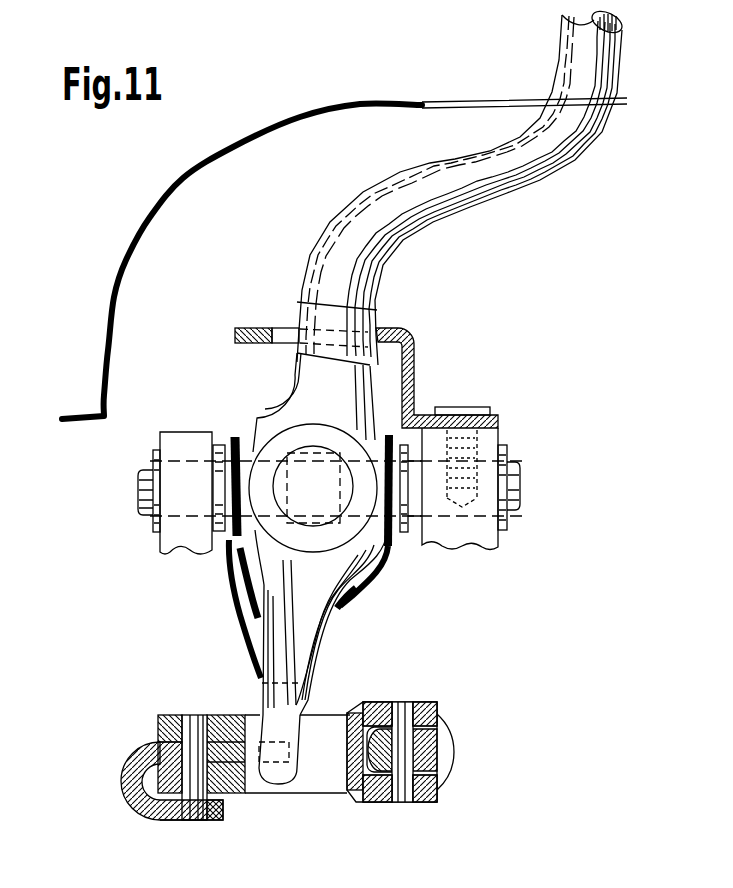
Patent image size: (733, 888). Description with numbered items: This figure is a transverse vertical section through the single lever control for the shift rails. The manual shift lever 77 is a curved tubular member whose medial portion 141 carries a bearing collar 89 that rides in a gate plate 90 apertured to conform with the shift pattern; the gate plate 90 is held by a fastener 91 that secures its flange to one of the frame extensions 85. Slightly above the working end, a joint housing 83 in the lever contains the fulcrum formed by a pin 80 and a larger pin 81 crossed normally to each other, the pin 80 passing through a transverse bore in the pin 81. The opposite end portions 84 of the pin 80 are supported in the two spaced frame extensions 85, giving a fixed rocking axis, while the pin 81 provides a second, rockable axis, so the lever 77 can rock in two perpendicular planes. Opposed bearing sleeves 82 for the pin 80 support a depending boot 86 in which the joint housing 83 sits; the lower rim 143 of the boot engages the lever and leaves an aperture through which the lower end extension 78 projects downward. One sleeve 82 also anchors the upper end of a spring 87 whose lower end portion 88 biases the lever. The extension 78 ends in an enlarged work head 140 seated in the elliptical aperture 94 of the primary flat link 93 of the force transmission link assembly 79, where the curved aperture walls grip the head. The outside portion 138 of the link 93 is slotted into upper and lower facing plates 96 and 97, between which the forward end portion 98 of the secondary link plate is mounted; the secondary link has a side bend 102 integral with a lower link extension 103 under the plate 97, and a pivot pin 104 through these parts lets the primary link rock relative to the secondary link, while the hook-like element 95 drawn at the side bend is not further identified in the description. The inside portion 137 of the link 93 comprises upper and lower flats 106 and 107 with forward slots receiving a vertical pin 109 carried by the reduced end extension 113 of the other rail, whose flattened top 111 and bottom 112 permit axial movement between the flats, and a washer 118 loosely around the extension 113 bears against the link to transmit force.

The manual shift lever 77 is at (624, 45).
The medial portion of the shift lever 141 is at (398, 292).
The bearing collar 89 is at (292, 311).
The gate plate 90 is at (401, 331).
The frame extensions 85 is at (500, 547).
The fastener 91 is at (487, 407).
The pin 80 is at (412, 532).
The end portions of pin 80 84 is at (519, 488).
The spring 87 is at (221, 444).
The bearing sleeves 82 is at (238, 440).
The joint housing 83 is at (273, 407).
The pin 81 is at (317, 450).
The lower end portion of the spring 88 is at (233, 628).
The boot 86 is at (368, 594).
The lower rim of the boot 143 is at (345, 610).
The lower end extension 78 is at (302, 672).
The elliptically shaped aperture 94 is at (281, 792).
The work head 140 is at (289, 784).
The force transmission link assembly 79 is at (356, 828).
The primary flat link 93 is at (225, 715).
The upper facing plate 96 is at (194, 715).
The forward end portion of the upper plate of the secondary link 98 is at (172, 746).
The outside portion of the primary link 138 is at (160, 715).
The side bend 102 is at (121, 784).
The hook rod 95 is at (160, 744).
The pivot pin 104 is at (191, 821).
The lower link extension 103 is at (216, 822).
The lower facing plate 97 is at (239, 795).
The annulus or washer 118 is at (456, 740).
The flattened top 111 is at (443, 707).
The reduced end extension 113 is at (441, 758).
The vertical pin 109 is at (401, 804).
The upper flat 106 is at (385, 703).
The inside portion of the primary link 137 is at (432, 703).
The flattened bottom 112 is at (382, 802).
The lower flat 107 is at (436, 803).